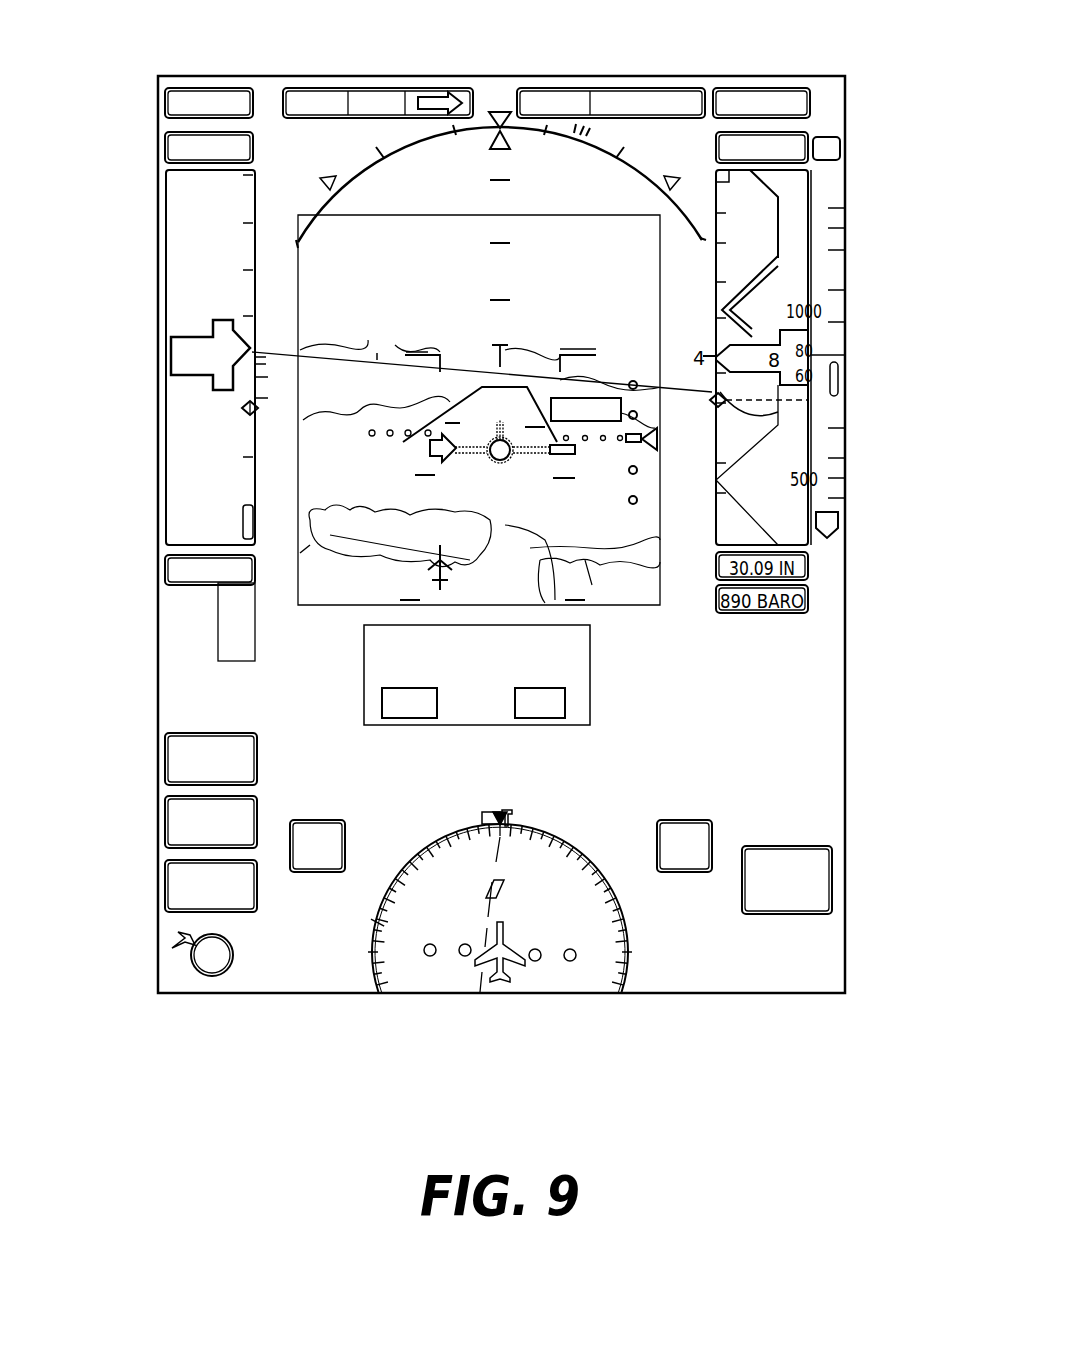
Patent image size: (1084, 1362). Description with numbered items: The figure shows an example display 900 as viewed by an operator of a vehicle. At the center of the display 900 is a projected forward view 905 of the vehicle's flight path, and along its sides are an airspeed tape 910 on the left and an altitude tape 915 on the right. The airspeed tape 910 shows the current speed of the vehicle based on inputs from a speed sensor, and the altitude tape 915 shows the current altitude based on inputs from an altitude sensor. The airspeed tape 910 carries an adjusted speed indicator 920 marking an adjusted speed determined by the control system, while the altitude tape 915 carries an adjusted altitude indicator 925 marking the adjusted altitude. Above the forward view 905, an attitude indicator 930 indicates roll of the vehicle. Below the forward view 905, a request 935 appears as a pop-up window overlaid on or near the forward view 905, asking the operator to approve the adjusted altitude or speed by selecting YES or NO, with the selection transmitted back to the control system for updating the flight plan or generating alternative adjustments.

The display 900 is at (885, 135).
The projected forward view 905 is at (540, 215).
The airspeed tape 910 is at (165, 292).
The altitude tape 915 is at (812, 270).
The adjusted speed indicator 920 is at (250, 410).
The adjusted altitude indicator 925 is at (718, 410).
The attitude indicator 930 is at (500, 112).
The request 935 is at (590, 673).